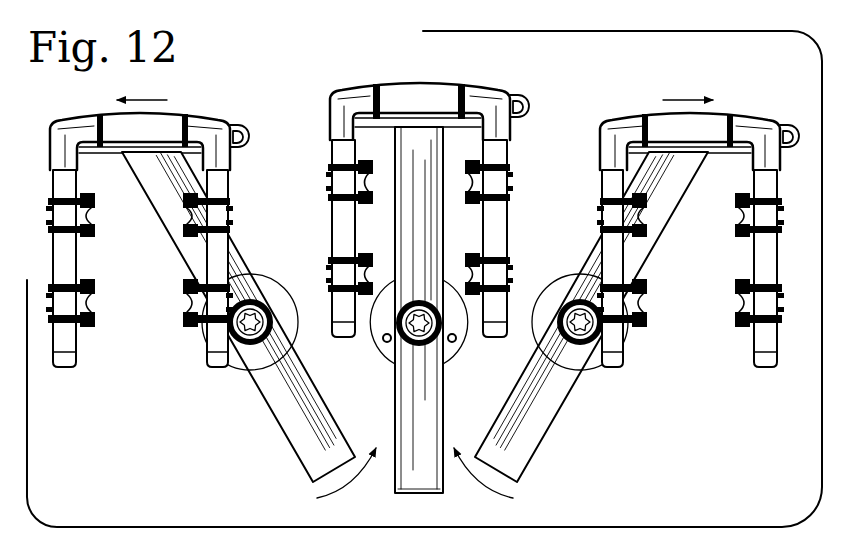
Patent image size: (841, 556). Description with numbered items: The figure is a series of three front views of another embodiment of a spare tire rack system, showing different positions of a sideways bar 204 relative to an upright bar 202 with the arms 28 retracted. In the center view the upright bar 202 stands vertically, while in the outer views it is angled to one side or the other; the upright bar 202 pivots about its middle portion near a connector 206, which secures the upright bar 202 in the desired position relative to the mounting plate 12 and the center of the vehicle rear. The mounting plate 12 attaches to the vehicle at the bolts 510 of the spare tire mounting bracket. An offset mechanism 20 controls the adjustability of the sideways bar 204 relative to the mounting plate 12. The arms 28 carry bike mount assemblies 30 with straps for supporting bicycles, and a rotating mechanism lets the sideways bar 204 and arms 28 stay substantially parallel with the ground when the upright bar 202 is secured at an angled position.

The mounting plate 12 is at (272, 292).
The offset mechanism 20 is at (229, 399).
The arms 28 is at (212, 247).
The bike mount assemblies 30 is at (102, 212).
The upright bar 202 is at (502, 423).
The sideways bar 204 is at (126, 143).
The connector 206 is at (256, 326).
The bolts 510 is at (385, 342).